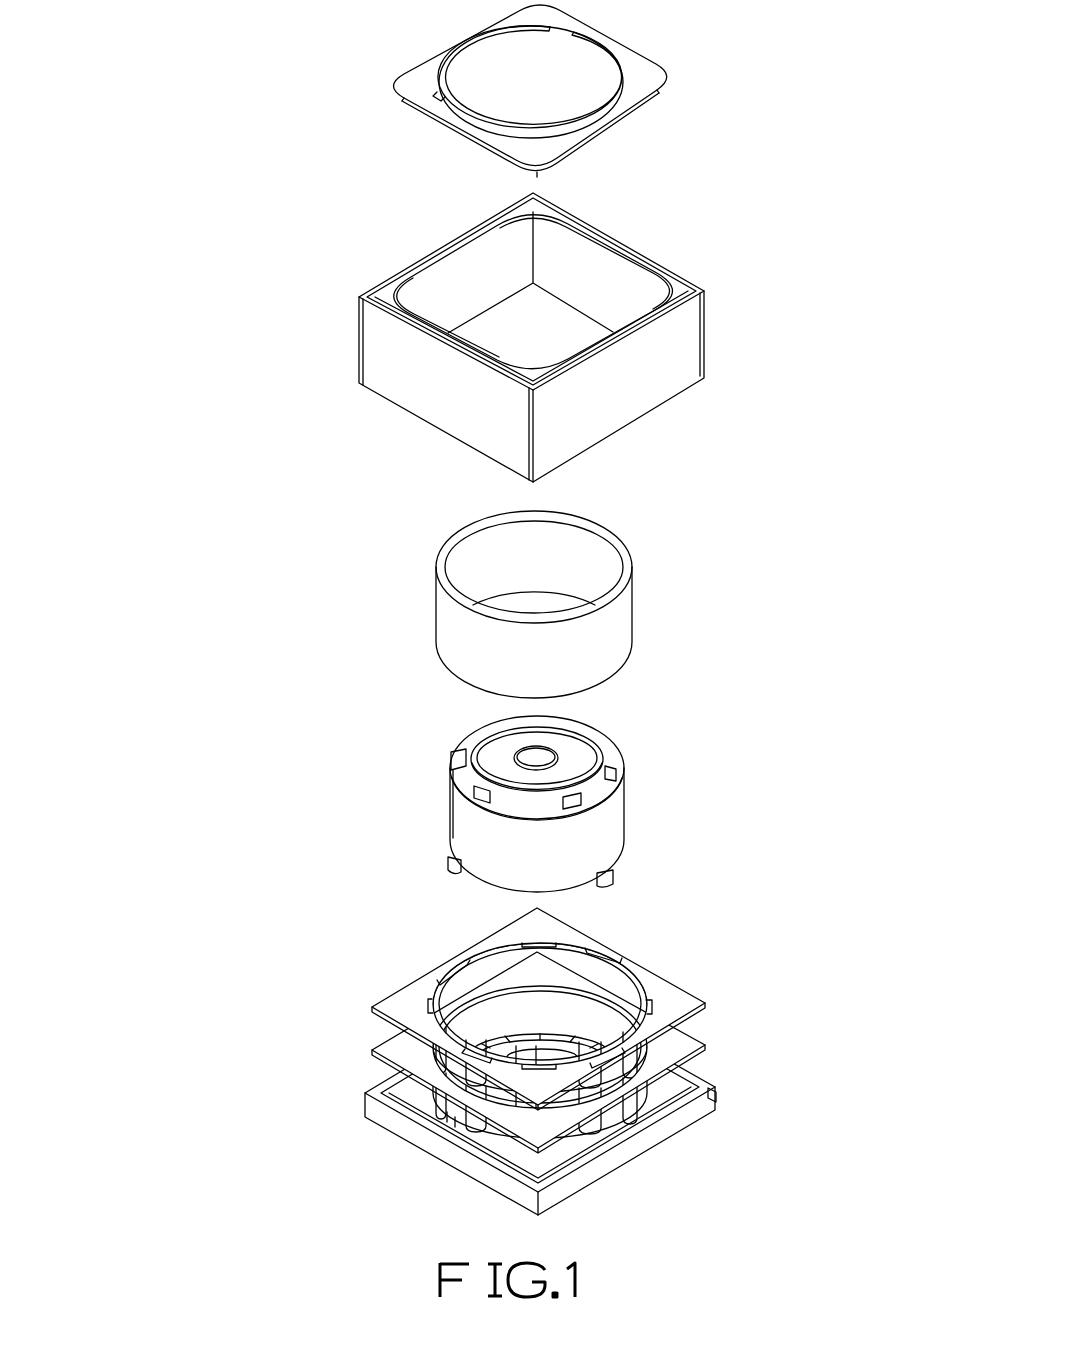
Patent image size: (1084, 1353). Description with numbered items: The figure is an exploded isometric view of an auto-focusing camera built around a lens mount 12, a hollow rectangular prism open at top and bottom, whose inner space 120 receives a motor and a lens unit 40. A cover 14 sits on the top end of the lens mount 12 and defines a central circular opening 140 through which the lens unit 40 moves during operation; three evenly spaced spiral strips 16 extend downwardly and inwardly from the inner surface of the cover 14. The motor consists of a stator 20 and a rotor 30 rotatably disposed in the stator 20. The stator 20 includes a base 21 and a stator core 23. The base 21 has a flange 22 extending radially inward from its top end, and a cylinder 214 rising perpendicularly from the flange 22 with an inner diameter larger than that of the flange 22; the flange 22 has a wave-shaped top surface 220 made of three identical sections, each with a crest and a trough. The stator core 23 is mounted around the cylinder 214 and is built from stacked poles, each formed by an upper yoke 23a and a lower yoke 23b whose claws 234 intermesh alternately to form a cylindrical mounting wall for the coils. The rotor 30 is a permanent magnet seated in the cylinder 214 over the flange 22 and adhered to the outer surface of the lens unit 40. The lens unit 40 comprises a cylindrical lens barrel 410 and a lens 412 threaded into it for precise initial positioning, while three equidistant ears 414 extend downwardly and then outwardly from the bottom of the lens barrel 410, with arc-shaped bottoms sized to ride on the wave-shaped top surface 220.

The lens mount 12 is at (687, 333).
The inner space 120 is at (518, 333).
The cover 14 is at (645, 87).
The circular opening 140 is at (480, 90).
The spiral strips 16 is at (590, 57).
The stator 20 is at (487, 1058).
The base 21 is at (672, 1127).
The flange 22 is at (578, 1050).
The top surface 220 is at (538, 1038).
The cylinder 214 is at (645, 1000).
The stator core 23 is at (487, 1030).
The upper yoke 23a is at (518, 1009).
The lower yoke 23b is at (410, 1050).
The claws 234 is at (453, 1110).
The rotor 30 is at (425, 568).
The lens unit 40 is at (562, 805).
The lens barrel 410 is at (593, 838).
The lens 412 is at (567, 757).
The ears 414 is at (452, 865).